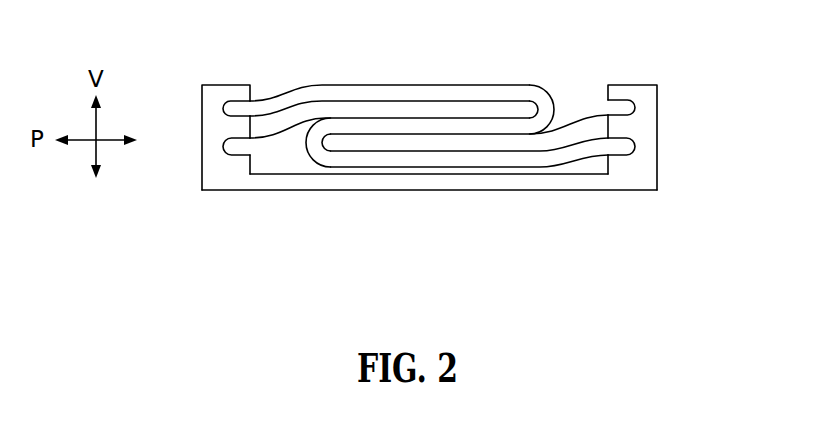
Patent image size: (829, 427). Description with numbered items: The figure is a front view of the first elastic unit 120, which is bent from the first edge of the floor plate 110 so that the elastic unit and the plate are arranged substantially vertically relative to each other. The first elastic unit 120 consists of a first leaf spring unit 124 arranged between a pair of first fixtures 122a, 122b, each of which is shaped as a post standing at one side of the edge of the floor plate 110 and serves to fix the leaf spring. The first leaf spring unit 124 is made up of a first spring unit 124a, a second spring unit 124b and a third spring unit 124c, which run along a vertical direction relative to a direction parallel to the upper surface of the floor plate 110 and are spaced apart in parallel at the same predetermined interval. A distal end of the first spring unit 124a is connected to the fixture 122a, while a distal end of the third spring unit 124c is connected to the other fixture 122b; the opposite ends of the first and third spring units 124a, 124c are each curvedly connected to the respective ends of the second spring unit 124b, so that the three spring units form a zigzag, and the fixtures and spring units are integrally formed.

The floor plate 110 is at (540, 183).
The first elastic unit 120 is at (668, 135).
The first fixture 122a is at (214, 93).
The first fixture 122b is at (637, 90).
The first leaf spring unit 124 is at (296, 165).
The first spring unit 124a is at (505, 90).
The second spring unit 124b is at (437, 125).
The third spring unit 124c is at (460, 163).